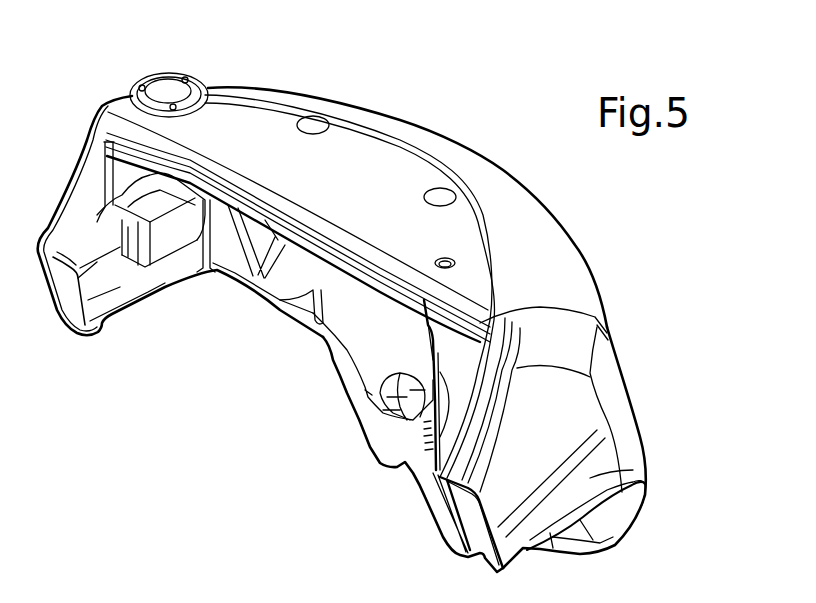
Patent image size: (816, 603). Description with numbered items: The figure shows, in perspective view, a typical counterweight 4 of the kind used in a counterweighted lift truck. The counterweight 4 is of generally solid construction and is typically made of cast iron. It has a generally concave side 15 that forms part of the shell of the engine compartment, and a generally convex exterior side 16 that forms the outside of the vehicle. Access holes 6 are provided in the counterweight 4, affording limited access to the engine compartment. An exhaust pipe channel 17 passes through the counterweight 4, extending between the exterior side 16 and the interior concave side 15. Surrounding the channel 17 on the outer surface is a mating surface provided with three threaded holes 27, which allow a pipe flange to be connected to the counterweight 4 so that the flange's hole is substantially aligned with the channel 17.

The counterweight 4 is at (380, 102).
The access holes 6 is at (297, 284).
The concave side 15 is at (294, 366).
The convex exterior side 16 is at (609, 284).
The exhaust pipe channel 17 is at (168, 92).
The threaded holes 27 is at (140, 88).